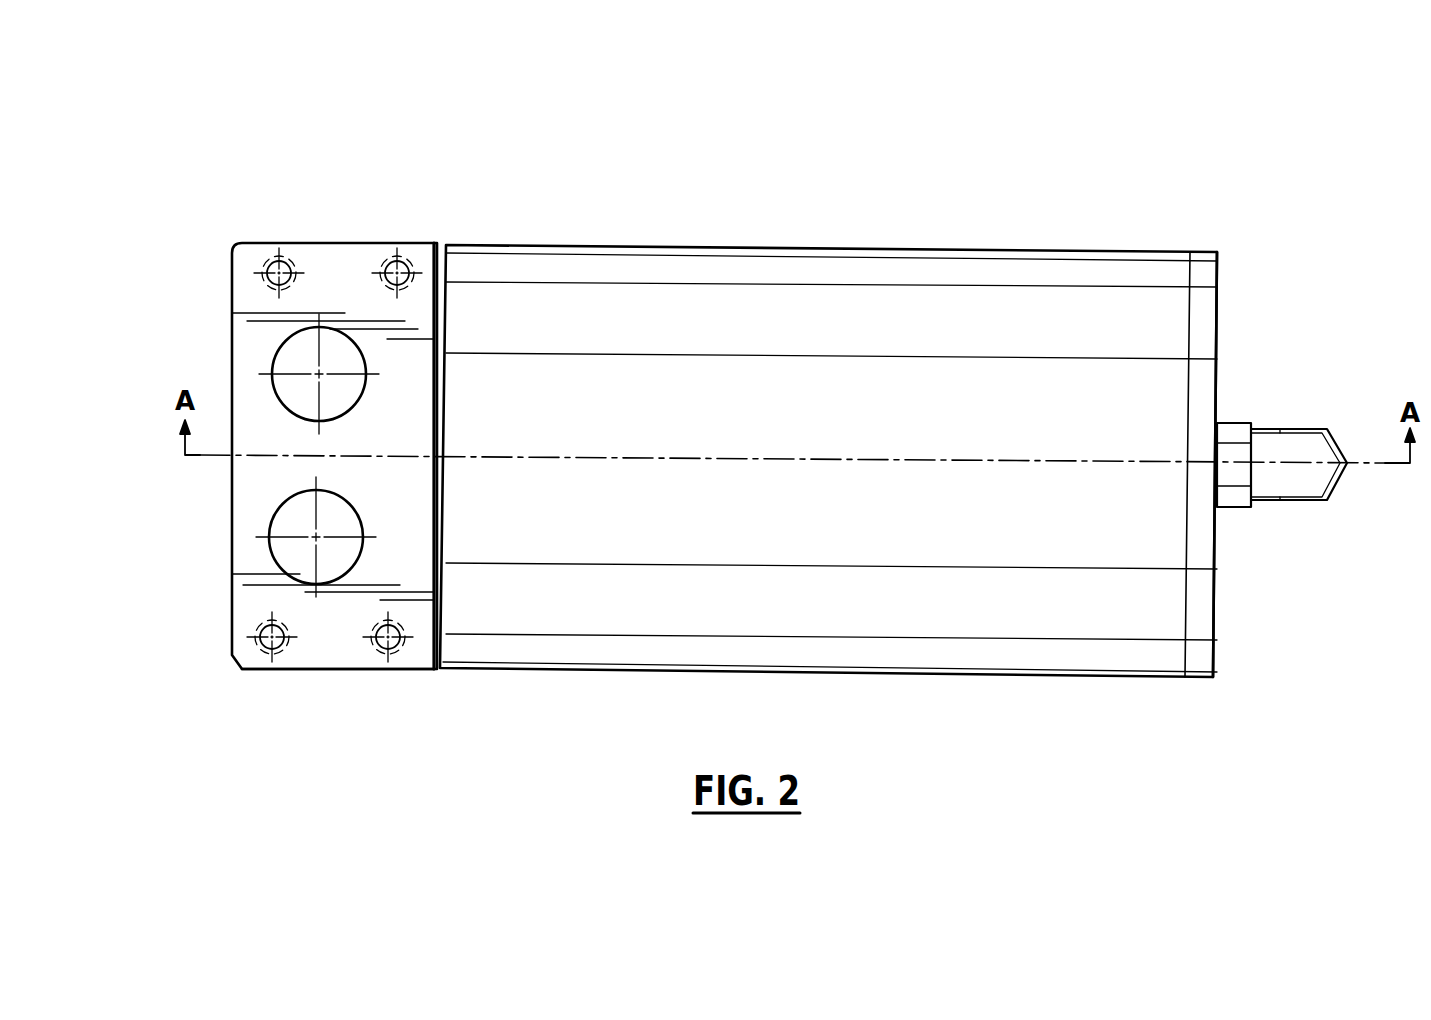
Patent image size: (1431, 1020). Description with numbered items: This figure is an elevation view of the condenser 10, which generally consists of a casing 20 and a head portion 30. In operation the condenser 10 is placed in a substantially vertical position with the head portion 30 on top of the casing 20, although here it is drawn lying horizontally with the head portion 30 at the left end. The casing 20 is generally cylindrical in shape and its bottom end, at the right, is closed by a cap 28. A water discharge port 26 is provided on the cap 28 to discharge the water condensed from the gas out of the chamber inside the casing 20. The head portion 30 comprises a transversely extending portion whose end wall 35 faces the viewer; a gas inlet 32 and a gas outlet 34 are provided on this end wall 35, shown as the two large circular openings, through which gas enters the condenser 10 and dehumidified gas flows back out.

The condenser 10 is at (886, 110).
The casing 20 is at (612, 275).
The water discharge port 26 is at (1300, 448).
The cap 28 is at (1205, 273).
The head portion 30 is at (341, 243).
The gas inlet 32 is at (300, 360).
The gas outlet 34 is at (288, 554).
The end wall 35 is at (330, 648).